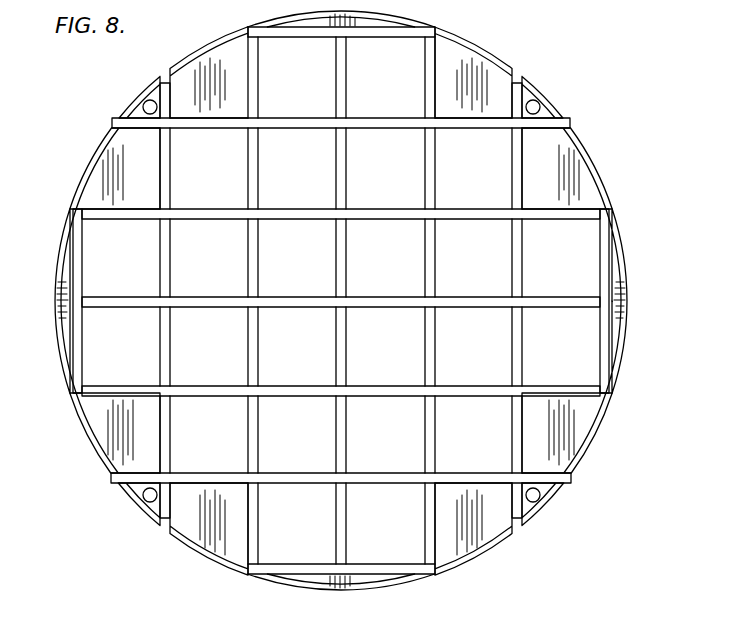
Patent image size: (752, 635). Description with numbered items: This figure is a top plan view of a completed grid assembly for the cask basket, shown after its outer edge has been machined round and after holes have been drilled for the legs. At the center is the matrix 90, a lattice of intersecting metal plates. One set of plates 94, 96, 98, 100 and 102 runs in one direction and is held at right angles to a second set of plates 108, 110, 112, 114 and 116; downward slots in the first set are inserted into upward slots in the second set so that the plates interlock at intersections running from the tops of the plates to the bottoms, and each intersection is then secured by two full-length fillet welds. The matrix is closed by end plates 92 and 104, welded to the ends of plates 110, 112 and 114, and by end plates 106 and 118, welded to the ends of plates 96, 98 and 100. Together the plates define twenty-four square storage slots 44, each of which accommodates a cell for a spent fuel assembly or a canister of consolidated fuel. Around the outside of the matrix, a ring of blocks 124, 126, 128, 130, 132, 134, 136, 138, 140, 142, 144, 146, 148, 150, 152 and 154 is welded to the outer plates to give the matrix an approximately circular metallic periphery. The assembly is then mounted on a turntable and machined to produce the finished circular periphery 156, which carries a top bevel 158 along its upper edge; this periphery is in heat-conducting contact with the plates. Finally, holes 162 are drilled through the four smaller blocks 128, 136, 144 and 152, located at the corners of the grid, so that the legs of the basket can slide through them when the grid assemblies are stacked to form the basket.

The matrix 90 is at (707, 180).
The storage slots 44 is at (490, 183).
The plate 92 is at (315, 40).
The plate 94 is at (315, 130).
The plate 96 is at (315, 220).
The plate 98 is at (315, 308).
The plate 100 is at (318, 397).
The plate 102 is at (318, 484).
The plate 104 is at (308, 563).
The plate 106 is at (82, 345).
The plate 108 is at (170, 362).
The plate 110 is at (258, 357).
The plate 112 is at (346, 357).
The plate 114 is at (435, 357).
The plate 116 is at (522, 363).
The plate 118 is at (600, 328).
The block 124 is at (38, 301).
The block 126 is at (98, 430).
The block 128 is at (137, 490).
The block 130 is at (188, 530).
The block 132 is at (387, 578).
The block 134 is at (492, 532).
The block 136 is at (545, 490).
The block 138 is at (585, 428).
The block 140 is at (612, 343).
The block 142 is at (585, 173).
The block 144 is at (545, 115).
The block 146 is at (487, 72).
The block 148 is at (397, 25).
The block 150 is at (197, 44).
The block 152 is at (138, 108).
The block 154 is at (100, 175).
The circular periphery 156 is at (57, 287).
The top bevel 158 is at (63, 250).
The holes 162 is at (152, 115).